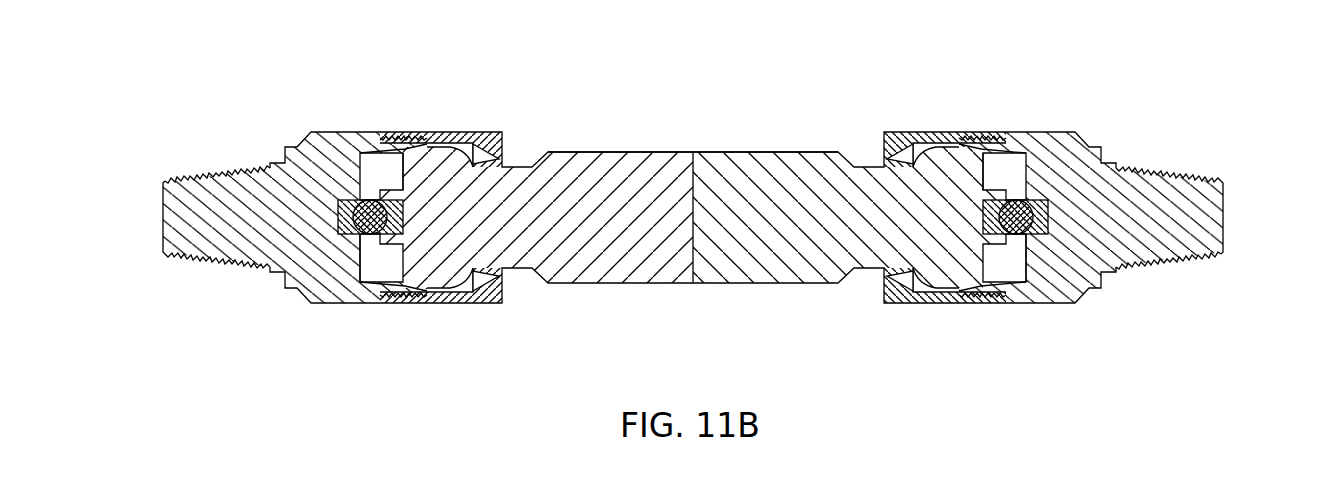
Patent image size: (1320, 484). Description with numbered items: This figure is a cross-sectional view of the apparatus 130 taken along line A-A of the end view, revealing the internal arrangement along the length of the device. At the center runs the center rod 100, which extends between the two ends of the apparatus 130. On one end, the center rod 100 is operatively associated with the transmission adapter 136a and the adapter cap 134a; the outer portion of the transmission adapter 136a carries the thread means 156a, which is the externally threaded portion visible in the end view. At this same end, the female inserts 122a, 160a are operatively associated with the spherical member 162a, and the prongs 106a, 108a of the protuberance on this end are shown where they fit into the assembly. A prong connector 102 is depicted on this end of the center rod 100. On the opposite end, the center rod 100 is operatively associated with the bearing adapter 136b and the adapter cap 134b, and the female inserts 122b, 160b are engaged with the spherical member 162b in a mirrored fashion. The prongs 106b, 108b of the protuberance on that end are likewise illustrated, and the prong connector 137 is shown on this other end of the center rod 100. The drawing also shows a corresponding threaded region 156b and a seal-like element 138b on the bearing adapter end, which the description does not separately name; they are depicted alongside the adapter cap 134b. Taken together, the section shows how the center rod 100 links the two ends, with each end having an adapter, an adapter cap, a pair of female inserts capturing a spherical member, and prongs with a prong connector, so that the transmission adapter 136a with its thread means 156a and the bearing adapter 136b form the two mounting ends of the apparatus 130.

The center rod 100 is at (703, 132).
The prong connector 102 is at (397, 192).
The prong 106a is at (388, 266).
The prong 106b is at (1005, 275).
The prong 108a is at (373, 175).
The prong 108b is at (1002, 165).
The female insert 122a is at (362, 280).
The female insert 122b is at (1022, 282).
The apparatus 130 is at (716, 312).
The adapter cap 134a is at (482, 140).
The adapter cap 134b is at (943, 303).
The transmission adapter 136a is at (358, 303).
The bearing adapter 136b is at (1057, 131).
The prong connector 137 is at (1004, 188).
The seal 138b is at (900, 296).
The thread means 156a is at (210, 172).
The second threaded end 156b is at (1138, 168).
The female insert 160a is at (345, 198).
The female insert 160b is at (1047, 217).
The spherical member 162a is at (362, 226).
The spherical member 162b is at (1028, 230).